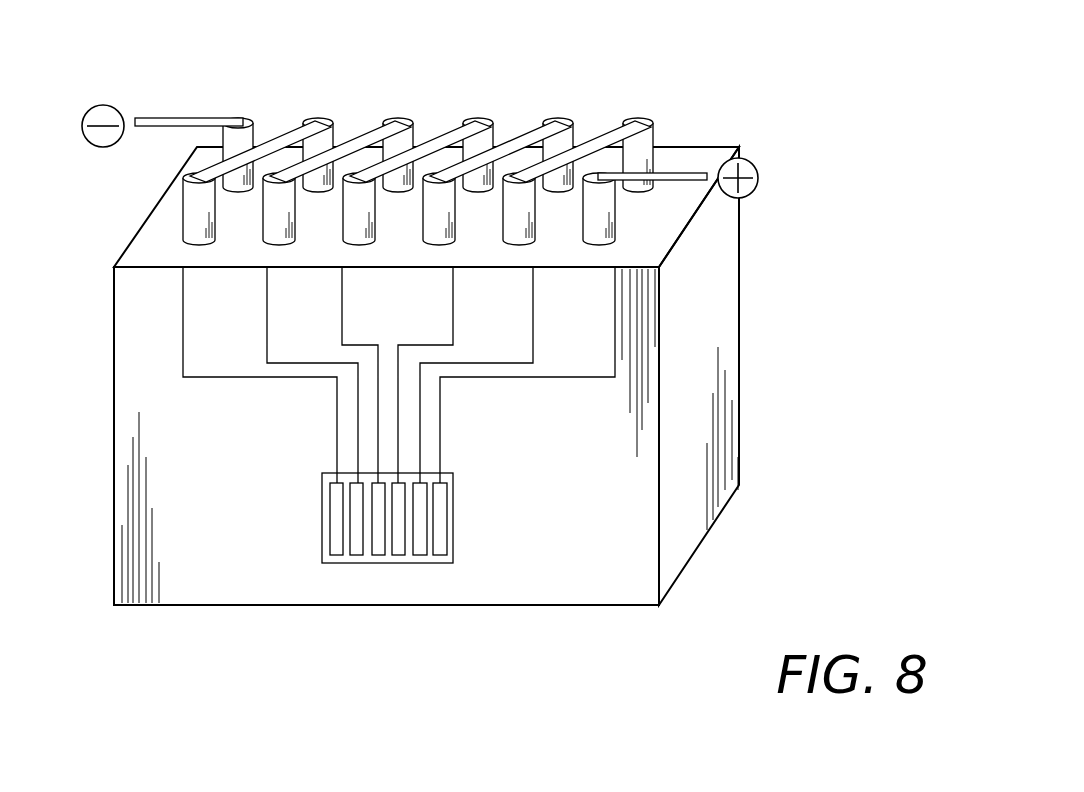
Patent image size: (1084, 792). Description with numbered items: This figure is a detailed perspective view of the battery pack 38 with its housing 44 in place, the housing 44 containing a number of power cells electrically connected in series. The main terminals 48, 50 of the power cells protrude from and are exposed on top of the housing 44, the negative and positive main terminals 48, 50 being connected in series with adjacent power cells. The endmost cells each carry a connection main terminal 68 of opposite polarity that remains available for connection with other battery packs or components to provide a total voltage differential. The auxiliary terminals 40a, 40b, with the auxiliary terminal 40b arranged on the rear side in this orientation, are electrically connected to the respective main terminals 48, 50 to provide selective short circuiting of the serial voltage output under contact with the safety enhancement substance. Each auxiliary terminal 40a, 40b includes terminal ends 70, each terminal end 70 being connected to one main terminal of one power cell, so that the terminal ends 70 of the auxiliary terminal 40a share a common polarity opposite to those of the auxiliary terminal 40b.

The battery pack 38 is at (482, 350).
The auxiliary terminal 40a is at (399, 477).
The auxiliary terminal 40b is at (753, 368).
The housing 44 is at (700, 147).
The main terminal 48 is at (563, 122).
The main terminal 50 is at (362, 178).
The connection main terminal 68 is at (245, 120).
The terminal end 70 is at (356, 547).